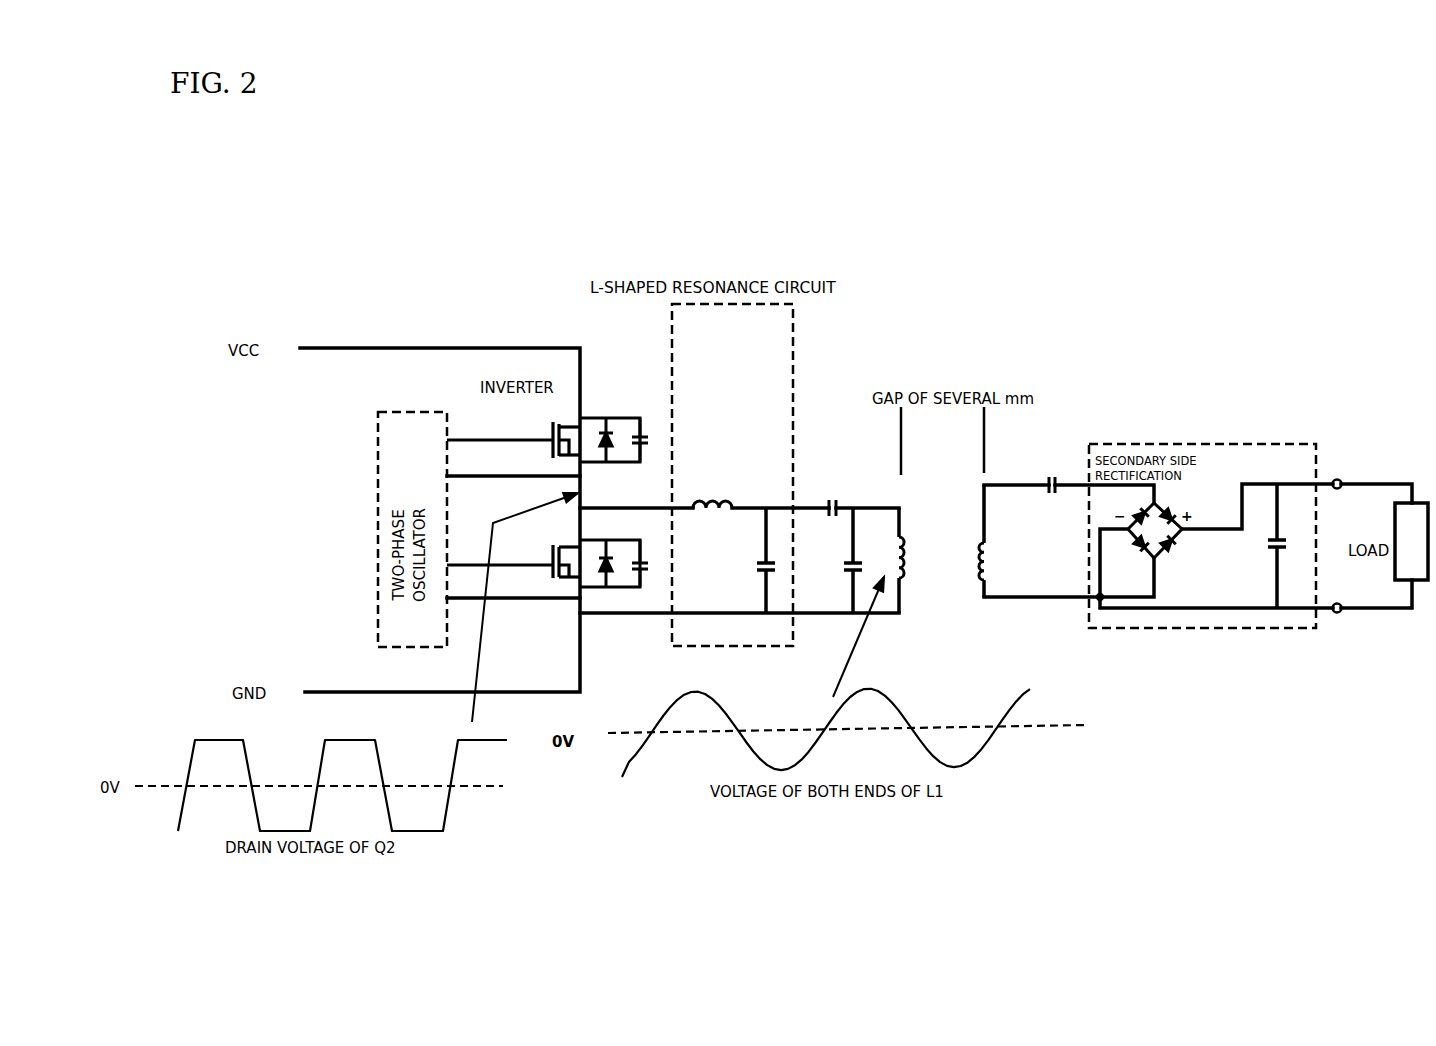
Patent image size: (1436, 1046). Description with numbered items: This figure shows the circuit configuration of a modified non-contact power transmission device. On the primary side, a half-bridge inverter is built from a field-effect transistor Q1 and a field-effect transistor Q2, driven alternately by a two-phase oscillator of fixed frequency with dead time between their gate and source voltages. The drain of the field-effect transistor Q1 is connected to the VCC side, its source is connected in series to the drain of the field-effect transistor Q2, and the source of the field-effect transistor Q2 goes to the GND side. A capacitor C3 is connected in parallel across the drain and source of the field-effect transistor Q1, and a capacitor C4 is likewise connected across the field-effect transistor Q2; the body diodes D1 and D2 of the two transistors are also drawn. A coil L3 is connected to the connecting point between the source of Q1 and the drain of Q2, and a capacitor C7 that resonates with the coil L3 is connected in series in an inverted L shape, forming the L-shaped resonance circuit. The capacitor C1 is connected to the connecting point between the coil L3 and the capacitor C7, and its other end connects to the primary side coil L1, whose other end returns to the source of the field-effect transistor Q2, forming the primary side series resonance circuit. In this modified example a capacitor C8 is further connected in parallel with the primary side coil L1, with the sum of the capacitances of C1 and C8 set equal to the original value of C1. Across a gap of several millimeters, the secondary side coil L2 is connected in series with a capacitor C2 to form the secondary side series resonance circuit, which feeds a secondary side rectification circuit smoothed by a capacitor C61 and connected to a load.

The field-effect transistor Q1 is at (513, 435).
The field-effect transistor Q2 is at (513, 554).
The body diode D1 is at (610, 440).
The body diode D2 is at (610, 563).
The capacitor C3 is at (648, 440).
The capacitor C4 is at (648, 566).
The coil of L-shaped resonance circuit L3 is at (712, 492).
The capacitor for primary side series resonance C1 is at (824, 497).
The capacitor of L-shaped resonance circuit C7 is at (751, 560).
The capacitor C8 is at (839, 560).
The primary side coil L1 is at (888, 560).
The capacitor for secondary side series resonance C2 is at (1047, 475).
The secondary side coil L2 is at (996, 541).
The smoothing capacitor C61 is at (1294, 546).